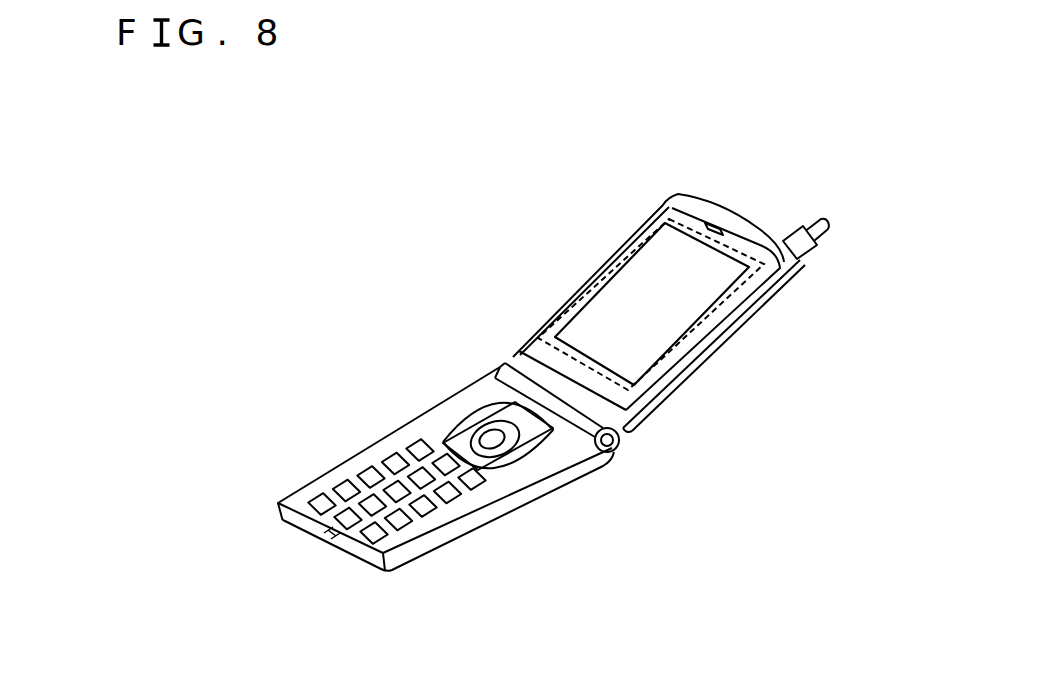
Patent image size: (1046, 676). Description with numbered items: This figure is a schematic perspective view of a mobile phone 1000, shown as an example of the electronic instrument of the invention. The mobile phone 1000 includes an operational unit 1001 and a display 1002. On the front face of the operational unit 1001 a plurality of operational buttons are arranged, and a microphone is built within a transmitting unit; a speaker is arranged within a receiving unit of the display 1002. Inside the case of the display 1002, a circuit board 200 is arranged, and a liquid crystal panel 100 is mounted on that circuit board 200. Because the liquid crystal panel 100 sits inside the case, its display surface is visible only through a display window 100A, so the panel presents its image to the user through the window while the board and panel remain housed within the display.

The mobile phone 1000 is at (285, 213).
The operational unit 1001 is at (360, 458).
The display 1002 is at (713, 338).
The liquid crystal panel 100 is at (690, 220).
The display window 100A is at (620, 306).
The circuit board 200 is at (750, 242).